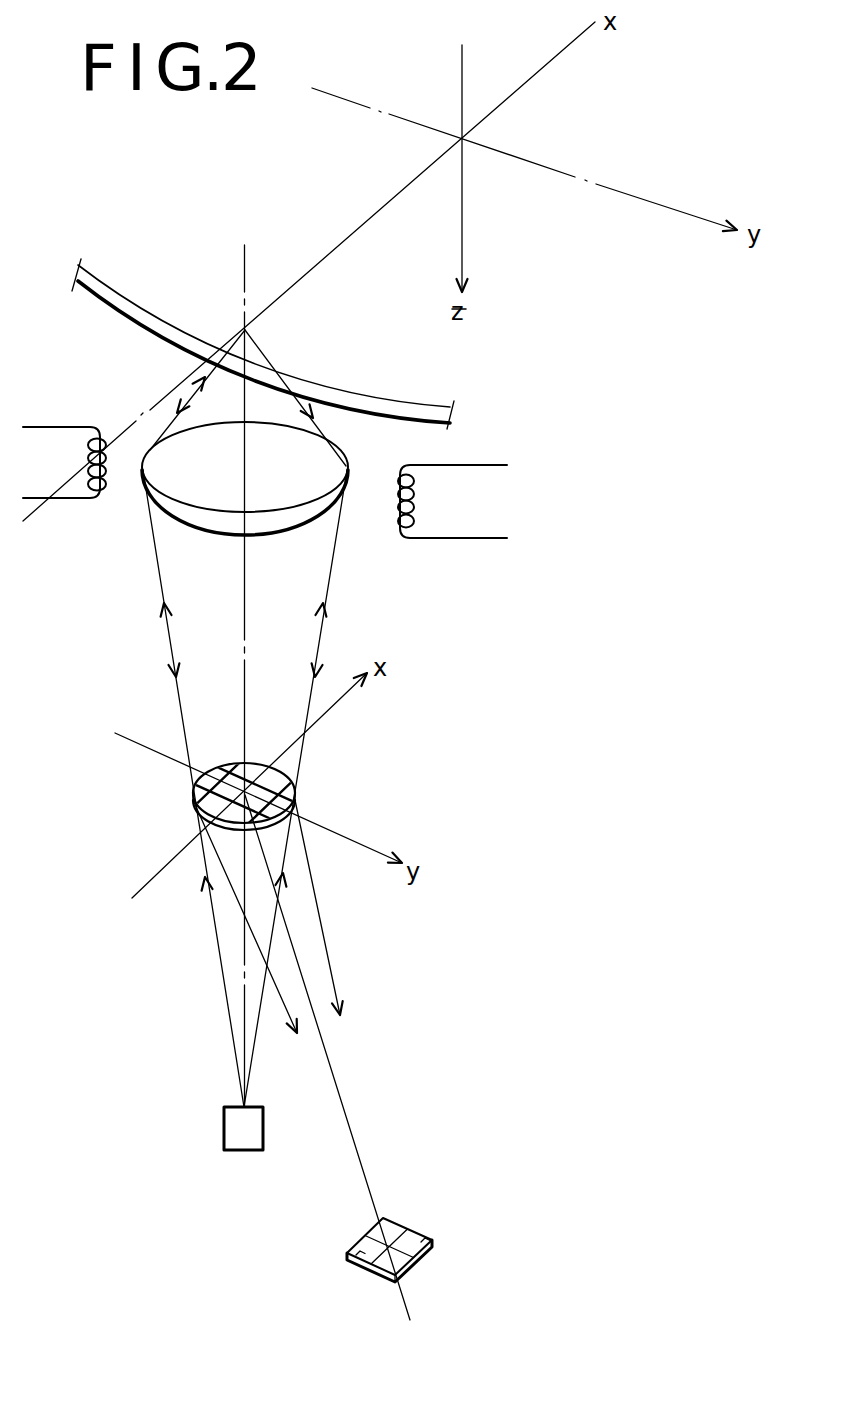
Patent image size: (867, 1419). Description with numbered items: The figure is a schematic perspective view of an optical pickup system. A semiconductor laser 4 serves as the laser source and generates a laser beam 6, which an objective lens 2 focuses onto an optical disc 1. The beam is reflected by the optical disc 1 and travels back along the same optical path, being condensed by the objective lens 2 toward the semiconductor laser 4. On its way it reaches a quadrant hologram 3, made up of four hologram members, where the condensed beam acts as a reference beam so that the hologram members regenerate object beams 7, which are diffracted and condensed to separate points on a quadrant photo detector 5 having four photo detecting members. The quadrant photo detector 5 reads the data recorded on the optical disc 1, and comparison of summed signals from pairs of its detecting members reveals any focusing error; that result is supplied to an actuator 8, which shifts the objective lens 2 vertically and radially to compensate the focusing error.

The optical disc 1 is at (140, 318).
The objective lens 2 is at (183, 513).
The quadrant hologram 3 is at (293, 780).
The semiconductor laser 4 is at (228, 1138).
The quadrant photo detector 5 is at (405, 1222).
The laser beam 6 is at (212, 937).
The object beams 7 is at (328, 952).
The actuator 8 is at (430, 532).